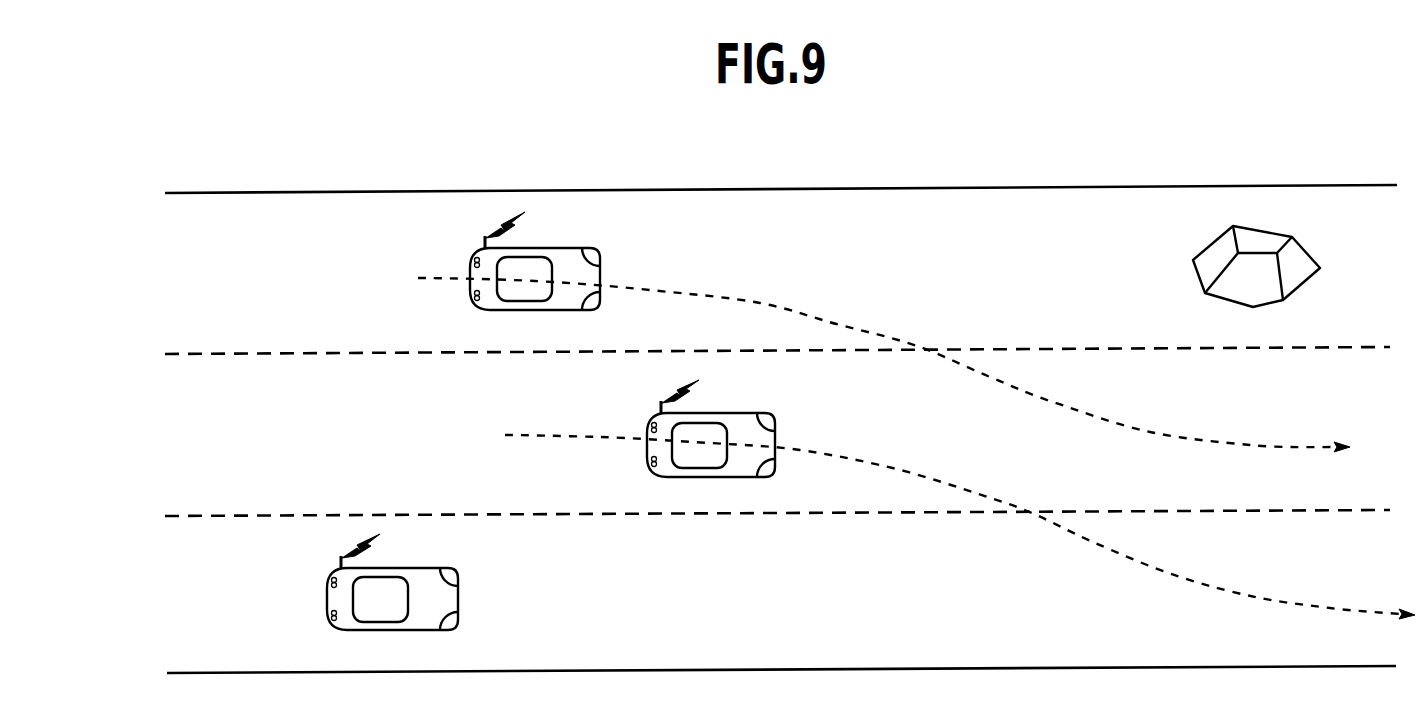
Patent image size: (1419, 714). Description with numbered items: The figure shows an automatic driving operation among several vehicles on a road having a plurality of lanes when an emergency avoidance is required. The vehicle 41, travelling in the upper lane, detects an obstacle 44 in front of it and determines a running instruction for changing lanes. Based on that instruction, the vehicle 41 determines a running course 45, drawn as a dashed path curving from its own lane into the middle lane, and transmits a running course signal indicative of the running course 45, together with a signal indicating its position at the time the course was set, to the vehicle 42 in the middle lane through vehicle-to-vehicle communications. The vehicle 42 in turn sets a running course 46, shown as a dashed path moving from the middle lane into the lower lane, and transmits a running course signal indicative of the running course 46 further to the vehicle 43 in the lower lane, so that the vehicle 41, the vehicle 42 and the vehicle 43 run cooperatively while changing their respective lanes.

The vehicle 41 is at (540, 248).
The vehicle 42 is at (710, 413).
The vehicle 43 is at (383, 568).
The obstacle 44 is at (1210, 240).
The running course 45 is at (787, 302).
The running course 46 is at (1090, 543).